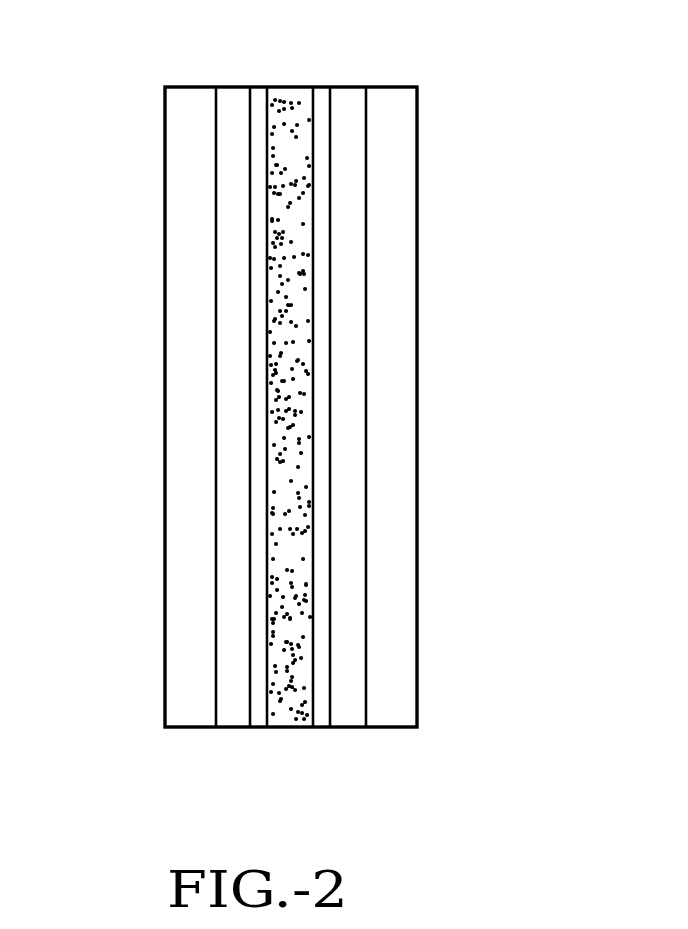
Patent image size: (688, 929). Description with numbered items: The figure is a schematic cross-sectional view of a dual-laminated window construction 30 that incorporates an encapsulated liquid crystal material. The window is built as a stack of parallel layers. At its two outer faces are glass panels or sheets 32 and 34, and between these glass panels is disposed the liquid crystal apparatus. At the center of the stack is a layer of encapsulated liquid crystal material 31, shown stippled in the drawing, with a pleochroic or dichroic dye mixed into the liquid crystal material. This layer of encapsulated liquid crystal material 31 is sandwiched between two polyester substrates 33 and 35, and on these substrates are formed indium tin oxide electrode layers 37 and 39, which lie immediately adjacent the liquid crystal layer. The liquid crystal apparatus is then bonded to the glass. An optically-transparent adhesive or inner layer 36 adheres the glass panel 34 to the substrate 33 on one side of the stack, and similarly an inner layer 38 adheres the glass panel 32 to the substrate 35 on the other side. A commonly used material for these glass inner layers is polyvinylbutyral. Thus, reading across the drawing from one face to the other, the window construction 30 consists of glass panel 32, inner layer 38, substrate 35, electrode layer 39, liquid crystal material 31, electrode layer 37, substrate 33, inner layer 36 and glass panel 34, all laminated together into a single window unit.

The dual-laminated window construction 30 is at (505, 428).
The layer of encapsulated liquid crystal material 31 is at (288, 740).
The glass panel 32 is at (165, 378).
The polyester substrate 33 is at (332, 78).
The glass panel 34 is at (417, 338).
The polyester substrate 35 is at (246, 80).
The inner layer 36 is at (348, 713).
The ITO electrode layer 37 is at (315, 78).
The inner layer 38 is at (232, 712).
The ITO electrode layer 39 is at (264, 78).